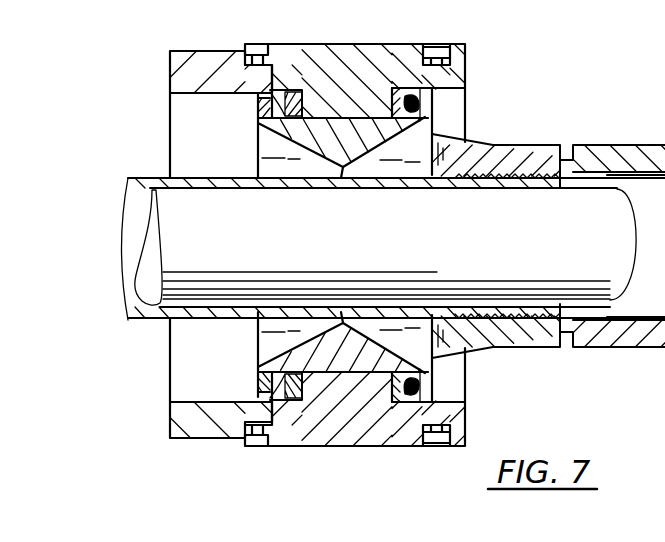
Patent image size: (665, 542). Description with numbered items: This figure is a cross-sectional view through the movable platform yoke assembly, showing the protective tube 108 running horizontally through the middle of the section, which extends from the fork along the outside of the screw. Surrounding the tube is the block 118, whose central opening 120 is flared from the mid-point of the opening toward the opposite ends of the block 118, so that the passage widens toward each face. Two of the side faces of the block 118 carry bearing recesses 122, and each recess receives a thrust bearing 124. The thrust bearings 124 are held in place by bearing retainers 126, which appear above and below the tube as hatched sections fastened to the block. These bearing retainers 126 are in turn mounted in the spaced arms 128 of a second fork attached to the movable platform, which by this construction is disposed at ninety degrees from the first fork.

The protective tube 108 is at (146, 176).
The block 118 is at (258, 121).
The central opening 120 is at (343, 167).
The bearing recesses 122 is at (262, 110).
The thrust bearings 124 is at (435, 106).
The bearing retainers 126 is at (365, 57).
The spaced arms 128 is at (207, 50).